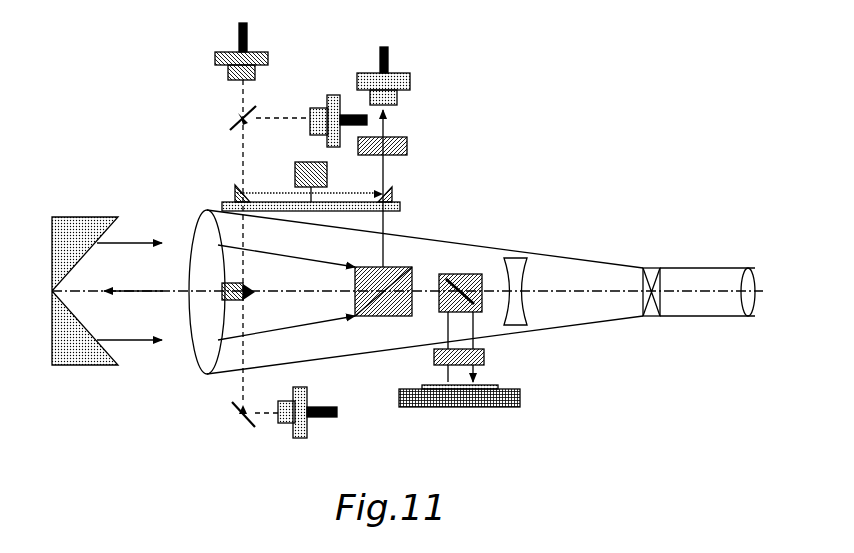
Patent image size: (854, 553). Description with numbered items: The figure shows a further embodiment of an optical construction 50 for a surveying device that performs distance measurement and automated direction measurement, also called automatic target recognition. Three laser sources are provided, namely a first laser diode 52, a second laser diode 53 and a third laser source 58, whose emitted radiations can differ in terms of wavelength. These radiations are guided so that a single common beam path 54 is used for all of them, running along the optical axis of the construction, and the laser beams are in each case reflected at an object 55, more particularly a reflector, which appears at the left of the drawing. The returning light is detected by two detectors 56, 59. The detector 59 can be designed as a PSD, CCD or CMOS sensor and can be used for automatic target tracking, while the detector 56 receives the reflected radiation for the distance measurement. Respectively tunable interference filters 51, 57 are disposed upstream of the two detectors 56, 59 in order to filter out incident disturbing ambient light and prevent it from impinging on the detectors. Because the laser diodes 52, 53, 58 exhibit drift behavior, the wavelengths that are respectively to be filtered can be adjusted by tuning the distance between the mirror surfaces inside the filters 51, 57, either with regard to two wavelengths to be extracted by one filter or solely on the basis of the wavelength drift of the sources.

The optical construction 50 is at (81, 51).
The tunable interference filter 51 is at (407, 137).
The laser diode 52 is at (252, 62).
The laser diode 53 is at (330, 97).
The common beam path 54 is at (148, 290).
The object 55 is at (92, 233).
The detector 56 is at (387, 88).
The tunable interference filter 57 is at (485, 360).
The laser source 58 is at (307, 430).
The detector 59 is at (522, 393).